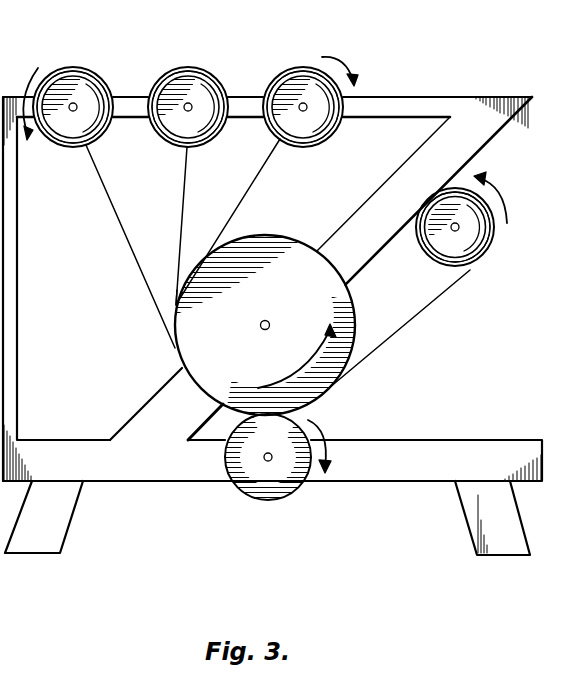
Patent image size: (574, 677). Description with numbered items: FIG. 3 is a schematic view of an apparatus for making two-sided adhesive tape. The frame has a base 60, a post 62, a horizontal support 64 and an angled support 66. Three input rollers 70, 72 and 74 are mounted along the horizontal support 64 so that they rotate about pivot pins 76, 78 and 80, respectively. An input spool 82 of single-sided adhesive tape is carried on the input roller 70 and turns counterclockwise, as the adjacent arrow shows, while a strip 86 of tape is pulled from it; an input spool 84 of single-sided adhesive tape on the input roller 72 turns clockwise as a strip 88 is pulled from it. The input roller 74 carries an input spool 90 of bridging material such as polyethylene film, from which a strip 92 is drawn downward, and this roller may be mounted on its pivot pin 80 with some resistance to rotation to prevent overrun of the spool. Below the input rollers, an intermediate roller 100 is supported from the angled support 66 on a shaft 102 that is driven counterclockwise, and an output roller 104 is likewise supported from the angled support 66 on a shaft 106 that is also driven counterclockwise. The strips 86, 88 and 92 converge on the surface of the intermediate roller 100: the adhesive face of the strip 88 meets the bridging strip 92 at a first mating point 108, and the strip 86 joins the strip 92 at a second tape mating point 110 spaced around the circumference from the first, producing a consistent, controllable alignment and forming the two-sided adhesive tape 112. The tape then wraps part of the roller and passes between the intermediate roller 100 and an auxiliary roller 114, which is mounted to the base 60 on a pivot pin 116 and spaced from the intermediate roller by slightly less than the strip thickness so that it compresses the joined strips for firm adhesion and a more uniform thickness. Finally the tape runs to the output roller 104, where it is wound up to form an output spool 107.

The base 60 is at (122, 470).
The post 62 is at (6, 267).
The horizontal support 64 is at (410, 104).
The angled support 66 is at (377, 203).
The input roller 70 is at (70, 84).
The input roller 72 is at (292, 85).
The input roller 74 is at (188, 87).
The pivot pin 76 is at (77, 103).
The pivot pin 78 is at (303, 103).
The pivot pin 80 is at (192, 106).
The input spool 82 is at (80, 104).
The input spool 84 is at (332, 130).
The strip 86 is at (115, 212).
The strip 88 is at (245, 194).
The input spool 90 is at (167, 68).
The strip 92 is at (185, 175).
The intermediate roller 100 is at (287, 250).
The shaft 102 is at (272, 325).
The output roller 104 is at (473, 223).
The shaft 106 is at (250, 233).
The output spool 107 is at (487, 243).
The first mating point 108 is at (173, 313).
The second tape mating point 110 is at (182, 363).
The two-sided adhesive tape 112 is at (400, 333).
The auxiliary roller 114 is at (290, 497).
The pivot pin 116 is at (267, 459).